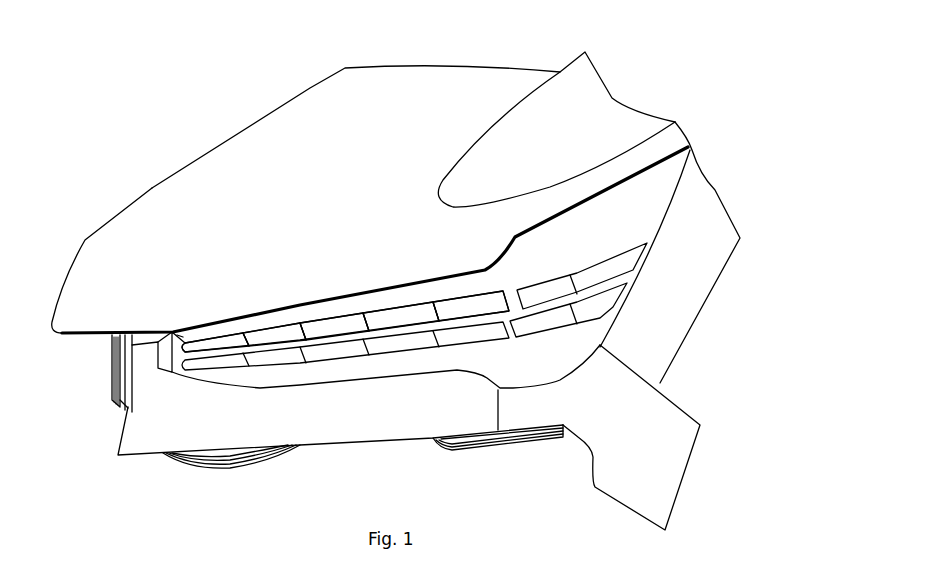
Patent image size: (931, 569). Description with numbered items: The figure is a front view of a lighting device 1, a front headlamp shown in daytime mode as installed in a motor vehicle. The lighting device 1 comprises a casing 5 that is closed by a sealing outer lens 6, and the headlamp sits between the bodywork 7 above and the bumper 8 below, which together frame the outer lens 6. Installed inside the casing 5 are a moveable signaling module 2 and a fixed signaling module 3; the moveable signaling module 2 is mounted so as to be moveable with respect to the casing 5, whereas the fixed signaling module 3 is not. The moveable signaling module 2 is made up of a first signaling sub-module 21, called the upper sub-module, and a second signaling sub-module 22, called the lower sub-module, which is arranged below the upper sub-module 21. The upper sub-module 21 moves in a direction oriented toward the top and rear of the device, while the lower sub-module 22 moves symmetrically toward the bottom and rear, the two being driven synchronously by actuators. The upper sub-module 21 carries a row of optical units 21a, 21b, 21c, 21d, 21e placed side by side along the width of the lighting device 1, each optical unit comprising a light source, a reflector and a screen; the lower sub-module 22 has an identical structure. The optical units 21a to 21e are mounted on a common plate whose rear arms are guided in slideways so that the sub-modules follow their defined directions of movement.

The lighting device 1 is at (641, 67).
The bodywork 7 is at (252, 135).
The casing 5 is at (667, 168).
The fixed signaling module 3 is at (578, 332).
The second signaling sub-module 22 is at (283, 357).
The moveable signaling module 2 is at (250, 358).
The bumper 8 is at (390, 430).
The outer lens 6 is at (150, 370).
The first signaling sub-module 21 is at (183, 337).
The optical unit 21a is at (223, 343).
The optical unit 21b is at (272, 337).
The optical unit 21c is at (333, 323).
The optical unit 21d is at (385, 317).
The optical unit 21e is at (467, 302).